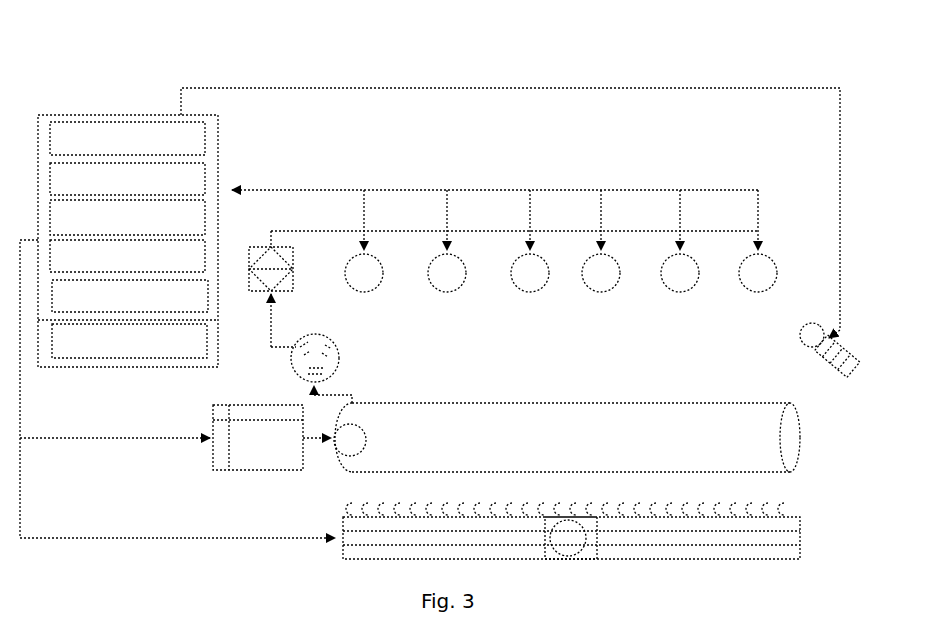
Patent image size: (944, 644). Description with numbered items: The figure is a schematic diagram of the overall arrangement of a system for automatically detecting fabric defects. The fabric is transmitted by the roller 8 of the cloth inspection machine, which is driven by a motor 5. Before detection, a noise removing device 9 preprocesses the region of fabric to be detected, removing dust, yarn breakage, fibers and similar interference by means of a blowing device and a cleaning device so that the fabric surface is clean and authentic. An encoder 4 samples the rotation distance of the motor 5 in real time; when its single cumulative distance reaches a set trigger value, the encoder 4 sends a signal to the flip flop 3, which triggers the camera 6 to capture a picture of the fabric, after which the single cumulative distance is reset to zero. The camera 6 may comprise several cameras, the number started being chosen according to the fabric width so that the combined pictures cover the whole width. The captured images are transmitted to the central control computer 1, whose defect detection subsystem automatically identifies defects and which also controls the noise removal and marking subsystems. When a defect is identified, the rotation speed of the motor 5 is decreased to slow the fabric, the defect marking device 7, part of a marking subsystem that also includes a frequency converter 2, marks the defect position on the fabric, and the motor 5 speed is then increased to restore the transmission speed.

The central control computer 1 is at (125, 105).
The frequency converter 2 is at (227, 405).
The flip flop 3 is at (259, 247).
The encoder 4 is at (303, 338).
The motor 5 is at (365, 425).
The camera 6 is at (786, 268).
The defect marking device 7 is at (820, 325).
The roller 8 is at (785, 452).
The noise removing device 9 is at (785, 527).